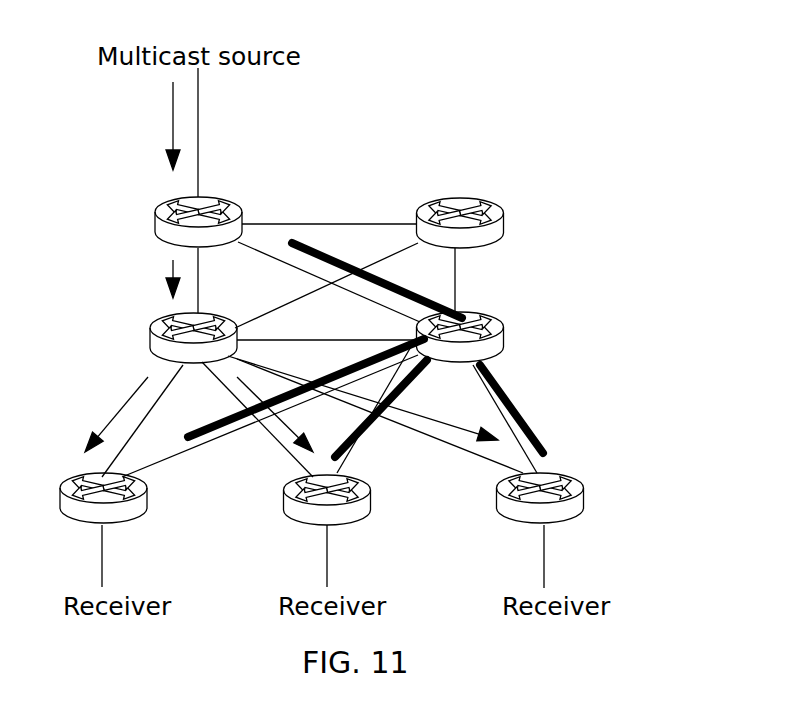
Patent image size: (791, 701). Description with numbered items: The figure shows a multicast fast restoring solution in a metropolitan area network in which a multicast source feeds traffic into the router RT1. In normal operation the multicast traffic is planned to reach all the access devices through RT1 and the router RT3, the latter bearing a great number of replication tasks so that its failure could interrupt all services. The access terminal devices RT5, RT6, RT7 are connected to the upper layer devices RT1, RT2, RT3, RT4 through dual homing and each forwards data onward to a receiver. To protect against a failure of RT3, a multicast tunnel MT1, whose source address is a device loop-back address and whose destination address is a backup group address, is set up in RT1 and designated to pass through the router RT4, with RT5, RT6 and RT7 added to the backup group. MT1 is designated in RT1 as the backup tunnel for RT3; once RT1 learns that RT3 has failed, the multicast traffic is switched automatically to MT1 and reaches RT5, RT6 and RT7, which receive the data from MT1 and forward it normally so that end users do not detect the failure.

The RT1 router RT1 is at (226, 222).
The RT2 router RT2 is at (489, 223).
The RT3 router RT3 is at (222, 338).
The RT4 router RT4 is at (489, 337).
The RT5 access terminal device RT5 is at (133, 498).
The RT6 access terminal device RT6 is at (356, 500).
The RT7 access terminal device RT7 is at (570, 498).
The multicast tunnel MT1 is at (386, 346).